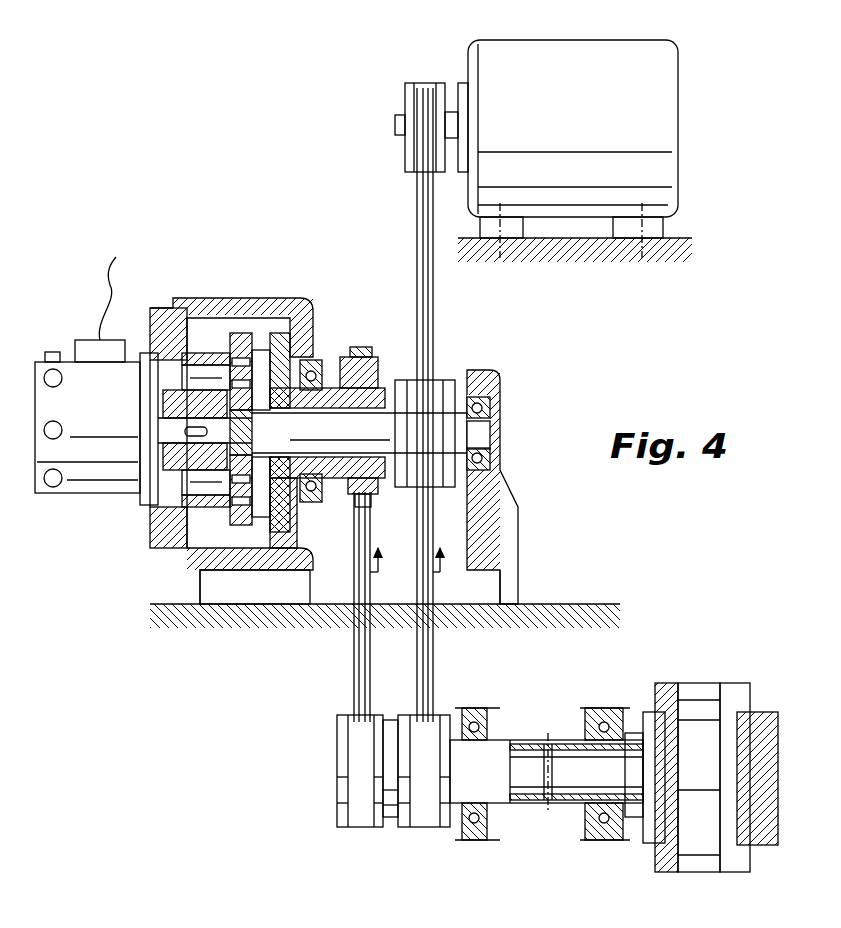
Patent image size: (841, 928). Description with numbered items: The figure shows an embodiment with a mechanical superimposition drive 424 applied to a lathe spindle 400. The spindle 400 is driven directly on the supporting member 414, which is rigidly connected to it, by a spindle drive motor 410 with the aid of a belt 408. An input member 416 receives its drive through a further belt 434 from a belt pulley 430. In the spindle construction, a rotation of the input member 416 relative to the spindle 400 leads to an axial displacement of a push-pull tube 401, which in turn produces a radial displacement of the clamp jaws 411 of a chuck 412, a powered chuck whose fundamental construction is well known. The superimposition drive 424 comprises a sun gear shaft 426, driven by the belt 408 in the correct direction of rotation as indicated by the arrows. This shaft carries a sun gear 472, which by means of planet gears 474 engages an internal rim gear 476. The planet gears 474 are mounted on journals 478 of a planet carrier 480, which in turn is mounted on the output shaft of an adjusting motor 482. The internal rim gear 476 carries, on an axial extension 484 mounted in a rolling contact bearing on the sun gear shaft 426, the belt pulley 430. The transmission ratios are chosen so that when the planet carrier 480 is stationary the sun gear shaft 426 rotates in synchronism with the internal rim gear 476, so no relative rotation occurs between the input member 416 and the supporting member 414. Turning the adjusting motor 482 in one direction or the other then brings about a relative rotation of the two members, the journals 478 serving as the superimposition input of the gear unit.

The spindle 400 is at (590, 745).
The push-pull tube 401 is at (548, 803).
The belt 408 is at (422, 270).
The spindle drive motor 410 is at (583, 139).
The clamp jaws 411 is at (733, 693).
The chuck 412 is at (688, 698).
The supporting member 414 is at (408, 822).
The input member 416 is at (345, 822).
The superimposition drive 424 is at (222, 580).
The sun gear shaft 426 is at (328, 423).
The belt pulley 430 is at (375, 365).
The belt 434 is at (360, 665).
The sun gear 472 is at (264, 441).
The planet gears 474 is at (238, 367).
The internal rim gear 476 is at (265, 360).
The journals 478 is at (240, 377).
The planet carrier 480 is at (170, 405).
The adjusting motor 482 is at (92, 477).
The axial extension 484 is at (333, 477).